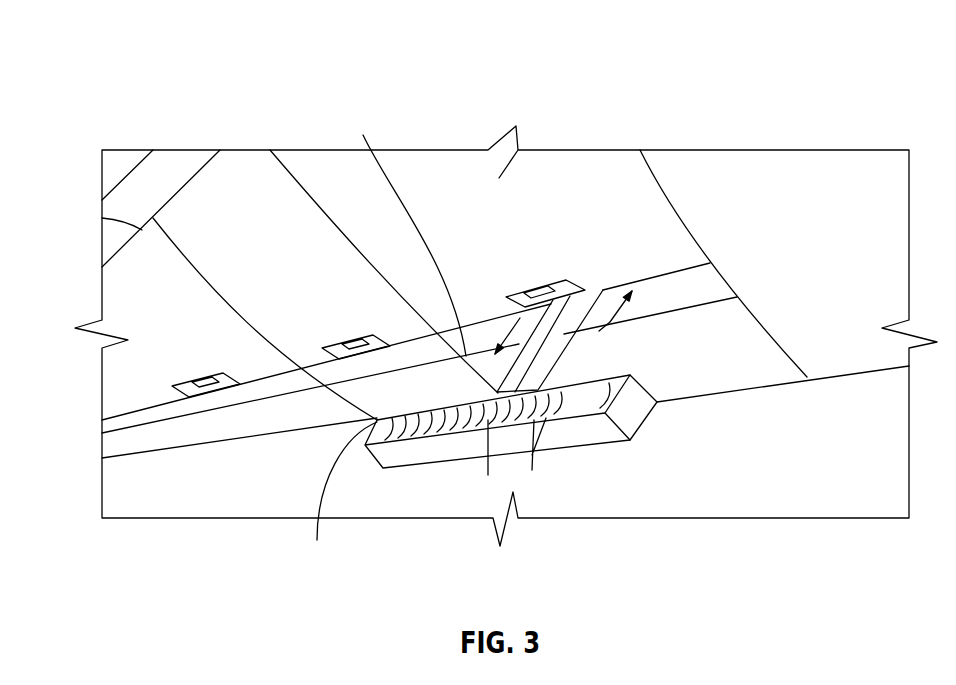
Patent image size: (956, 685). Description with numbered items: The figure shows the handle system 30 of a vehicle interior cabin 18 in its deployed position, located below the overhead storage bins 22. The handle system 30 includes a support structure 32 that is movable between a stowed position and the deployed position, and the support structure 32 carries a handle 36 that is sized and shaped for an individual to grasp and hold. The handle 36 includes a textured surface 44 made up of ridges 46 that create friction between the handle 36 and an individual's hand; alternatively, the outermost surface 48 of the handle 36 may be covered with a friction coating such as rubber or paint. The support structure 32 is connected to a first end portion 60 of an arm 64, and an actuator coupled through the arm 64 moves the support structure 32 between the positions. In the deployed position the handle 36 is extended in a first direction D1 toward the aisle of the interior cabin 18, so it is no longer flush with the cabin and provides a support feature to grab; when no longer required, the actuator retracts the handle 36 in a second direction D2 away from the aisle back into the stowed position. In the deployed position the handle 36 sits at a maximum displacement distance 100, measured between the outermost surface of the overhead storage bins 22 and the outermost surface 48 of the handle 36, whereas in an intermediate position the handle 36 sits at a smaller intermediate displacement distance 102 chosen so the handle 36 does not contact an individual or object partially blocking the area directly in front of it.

The interior cabin 18 is at (652, 383).
The overhead storage bins 22 is at (239, 170).
The handle system 30 is at (453, 352).
The support structure 32 is at (531, 435).
The handle 36 is at (641, 416).
The textured surface 44 is at (594, 407).
The ridges 46 is at (532, 459).
The outermost surface 48 is at (588, 441).
The first end portion 60 is at (490, 464).
The arm 64 is at (556, 296).
The maximum displacement distance 100 is at (317, 525).
The intermediate displacement distance 102 is at (376, 184).
The first direction D1 is at (498, 345).
The second direction D2 is at (638, 323).